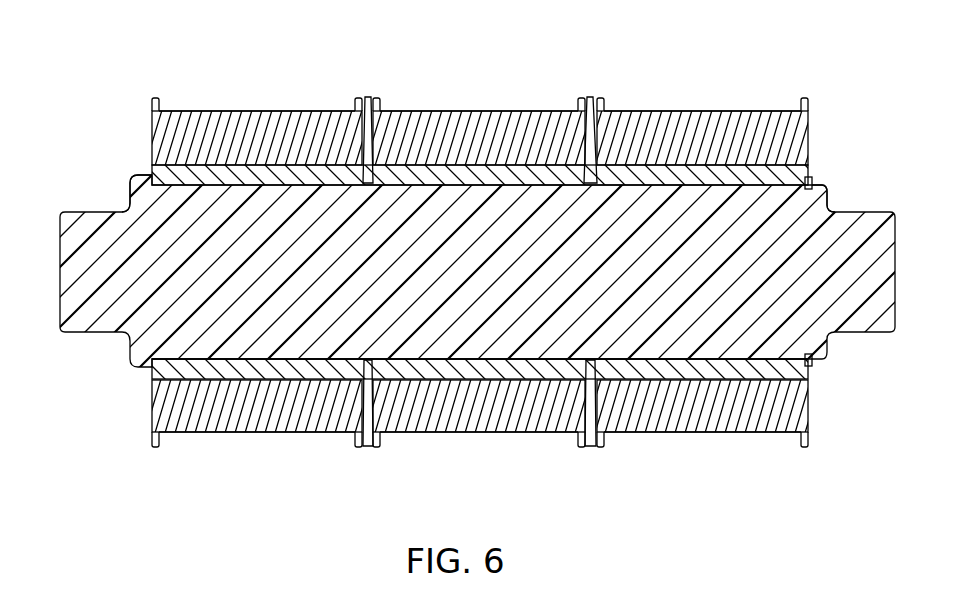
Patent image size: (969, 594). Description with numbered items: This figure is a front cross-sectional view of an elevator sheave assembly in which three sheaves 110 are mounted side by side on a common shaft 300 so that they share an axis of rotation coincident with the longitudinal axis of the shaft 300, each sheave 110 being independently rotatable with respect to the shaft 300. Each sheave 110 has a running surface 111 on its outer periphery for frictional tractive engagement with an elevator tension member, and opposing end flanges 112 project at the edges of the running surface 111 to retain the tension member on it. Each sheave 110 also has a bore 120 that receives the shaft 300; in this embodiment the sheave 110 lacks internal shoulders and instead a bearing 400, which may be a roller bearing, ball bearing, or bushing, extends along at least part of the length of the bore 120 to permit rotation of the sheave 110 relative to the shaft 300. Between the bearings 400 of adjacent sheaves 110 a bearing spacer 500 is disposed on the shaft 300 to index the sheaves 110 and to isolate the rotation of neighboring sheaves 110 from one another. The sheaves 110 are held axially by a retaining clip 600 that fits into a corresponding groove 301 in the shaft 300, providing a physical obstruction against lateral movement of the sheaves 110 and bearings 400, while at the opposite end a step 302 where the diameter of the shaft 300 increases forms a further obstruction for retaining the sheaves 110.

The sheave 110 is at (819, 126).
The running surface 111 is at (243, 111).
The end flange 112 is at (153, 447).
The bore 120 is at (232, 361).
The shaft 300 is at (60, 284).
The groove 301 is at (806, 192).
The step 302 is at (147, 176).
The bearing 400 is at (270, 178).
The bearing spacer 500 is at (366, 97).
The retaining clip 600 is at (814, 180).